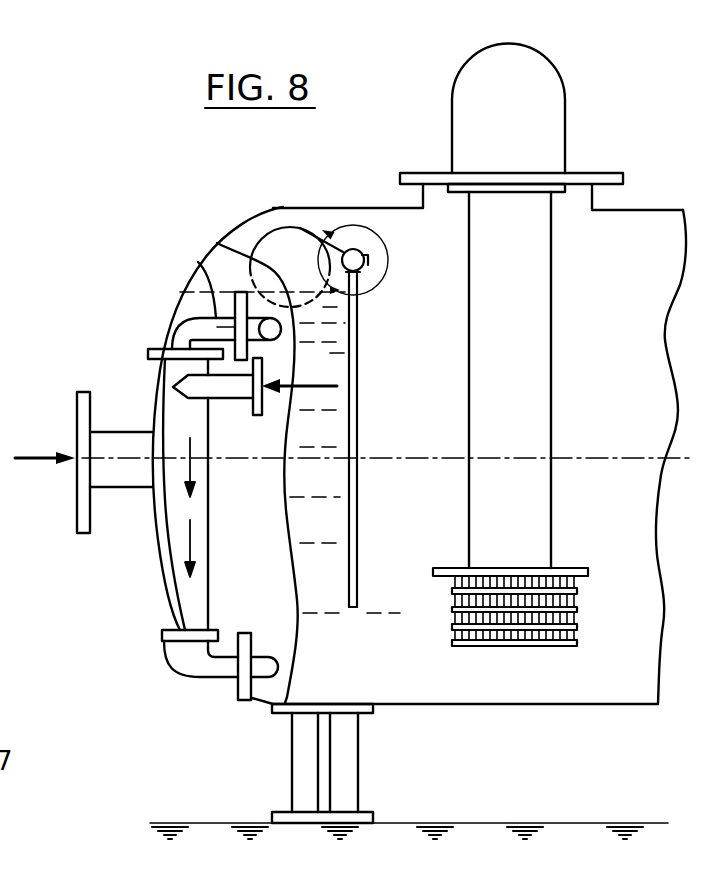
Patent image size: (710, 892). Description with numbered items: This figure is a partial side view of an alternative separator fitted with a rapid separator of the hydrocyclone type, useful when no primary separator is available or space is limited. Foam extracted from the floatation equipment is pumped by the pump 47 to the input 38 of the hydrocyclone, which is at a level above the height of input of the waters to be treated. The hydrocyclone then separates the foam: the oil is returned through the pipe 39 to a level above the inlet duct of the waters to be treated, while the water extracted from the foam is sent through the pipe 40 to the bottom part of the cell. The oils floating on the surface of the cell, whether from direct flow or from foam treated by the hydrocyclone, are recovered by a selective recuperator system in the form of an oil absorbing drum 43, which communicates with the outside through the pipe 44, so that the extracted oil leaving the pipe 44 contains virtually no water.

The input 38 is at (178, 424).
The pipe 39 is at (198, 262).
The pipe 40 is at (213, 664).
The oil absorbing drum 43 is at (277, 227).
The pipe 44 is at (365, 248).
The pump 47 is at (255, 383).